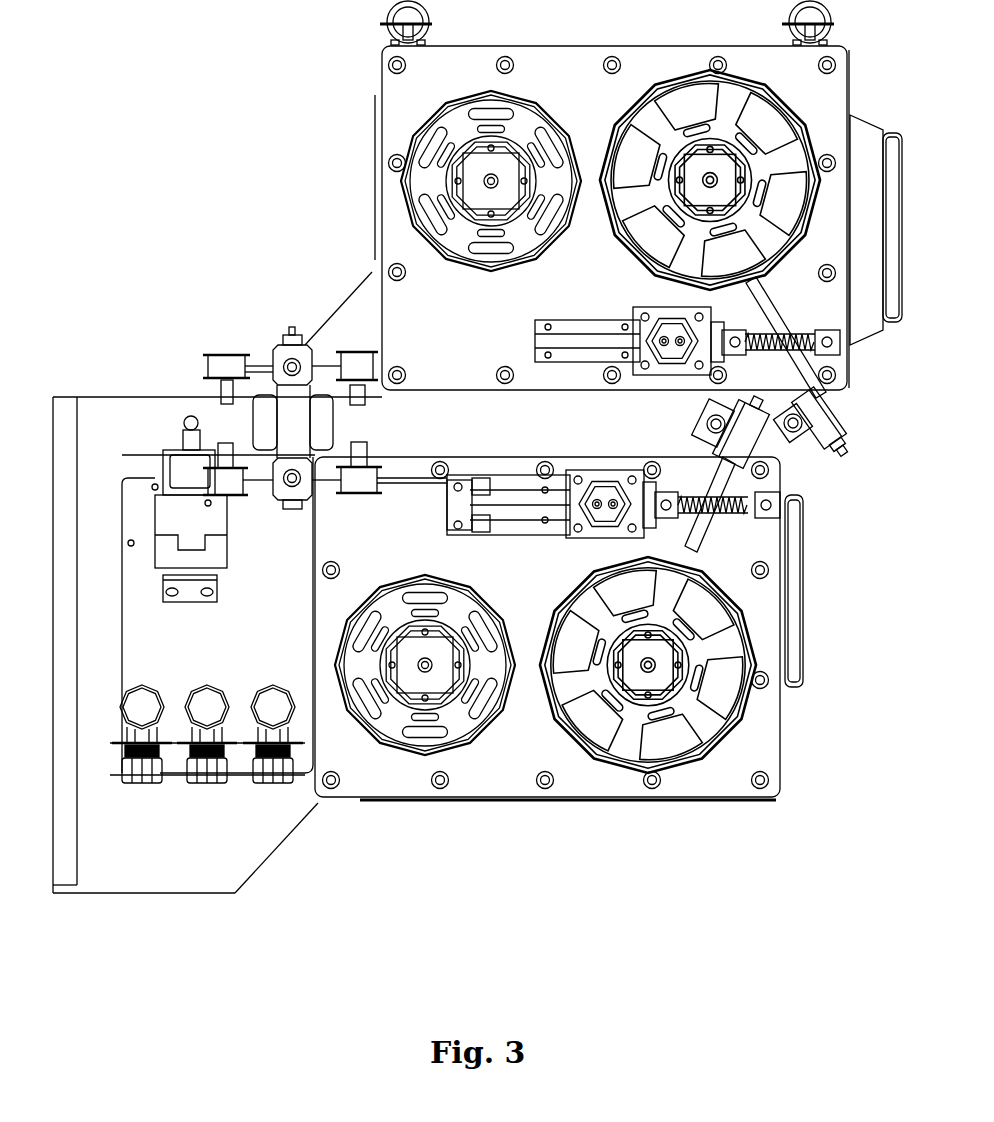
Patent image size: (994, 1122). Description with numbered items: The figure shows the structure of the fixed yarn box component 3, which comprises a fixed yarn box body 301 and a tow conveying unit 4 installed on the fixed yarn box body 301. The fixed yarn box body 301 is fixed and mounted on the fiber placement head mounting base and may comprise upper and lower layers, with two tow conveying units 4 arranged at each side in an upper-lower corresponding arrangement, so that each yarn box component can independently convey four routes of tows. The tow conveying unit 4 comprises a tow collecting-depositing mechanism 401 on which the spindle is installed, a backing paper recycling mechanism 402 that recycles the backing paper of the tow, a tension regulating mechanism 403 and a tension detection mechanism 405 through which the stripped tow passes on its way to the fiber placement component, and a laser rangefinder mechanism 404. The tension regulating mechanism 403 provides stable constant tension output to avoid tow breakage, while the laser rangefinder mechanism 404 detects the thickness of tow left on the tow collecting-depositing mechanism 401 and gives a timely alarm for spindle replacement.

The fixed yarn box component 3 is at (473, 502).
The fixed yarn box body 301 is at (123, 857).
The tow conveying unit 4 is at (815, 897).
The tow collecting-depositing mechanism 401 is at (458, 718).
The backing paper recycling mechanism 402 is at (707, 728).
The tension regulating mechanism 403 is at (632, 528).
The laser rangefinder mechanism 404 is at (770, 445).
The tension detection mechanism 405 is at (297, 438).